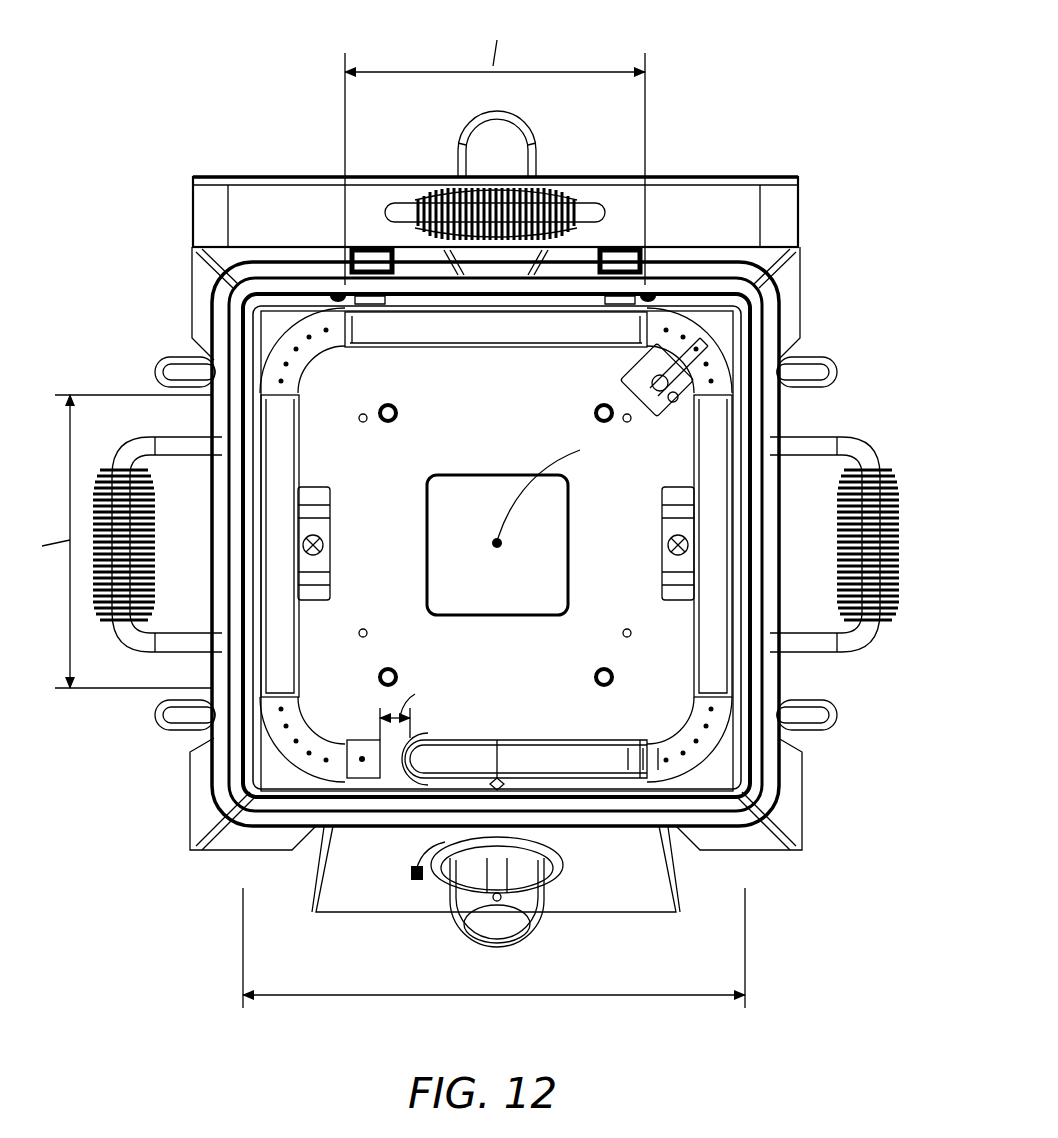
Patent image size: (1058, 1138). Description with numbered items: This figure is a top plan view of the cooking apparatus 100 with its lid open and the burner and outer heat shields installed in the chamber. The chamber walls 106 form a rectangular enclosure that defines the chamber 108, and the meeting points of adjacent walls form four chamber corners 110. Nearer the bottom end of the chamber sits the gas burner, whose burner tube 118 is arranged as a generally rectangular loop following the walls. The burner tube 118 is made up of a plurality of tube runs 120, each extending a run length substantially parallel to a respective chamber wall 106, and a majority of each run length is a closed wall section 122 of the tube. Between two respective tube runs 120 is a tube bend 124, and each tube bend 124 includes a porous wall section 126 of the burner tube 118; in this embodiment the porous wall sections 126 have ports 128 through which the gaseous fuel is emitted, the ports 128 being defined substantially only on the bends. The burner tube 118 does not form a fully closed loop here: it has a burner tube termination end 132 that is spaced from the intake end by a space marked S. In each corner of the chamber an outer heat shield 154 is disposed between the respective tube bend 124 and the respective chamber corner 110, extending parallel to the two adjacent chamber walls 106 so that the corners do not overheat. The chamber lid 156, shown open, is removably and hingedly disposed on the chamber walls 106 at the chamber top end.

The cooking apparatus 100 is at (856, 138).
The chamber walls 106 is at (320, 285).
The chamber 108 is at (567, 372).
The chamber corners 110 is at (300, 278).
The burner tube 118 is at (515, 752).
The tube runs 120 is at (487, 328).
The closed wall section 122 is at (304, 470).
The tube bends 124 is at (364, 370).
The porous wall section 126 is at (318, 357).
The ports 128 is at (660, 760).
The burner tube termination end 132 is at (362, 736).
The outer heat shields 154 is at (692, 300).
The chamber lid 156 is at (724, 195).